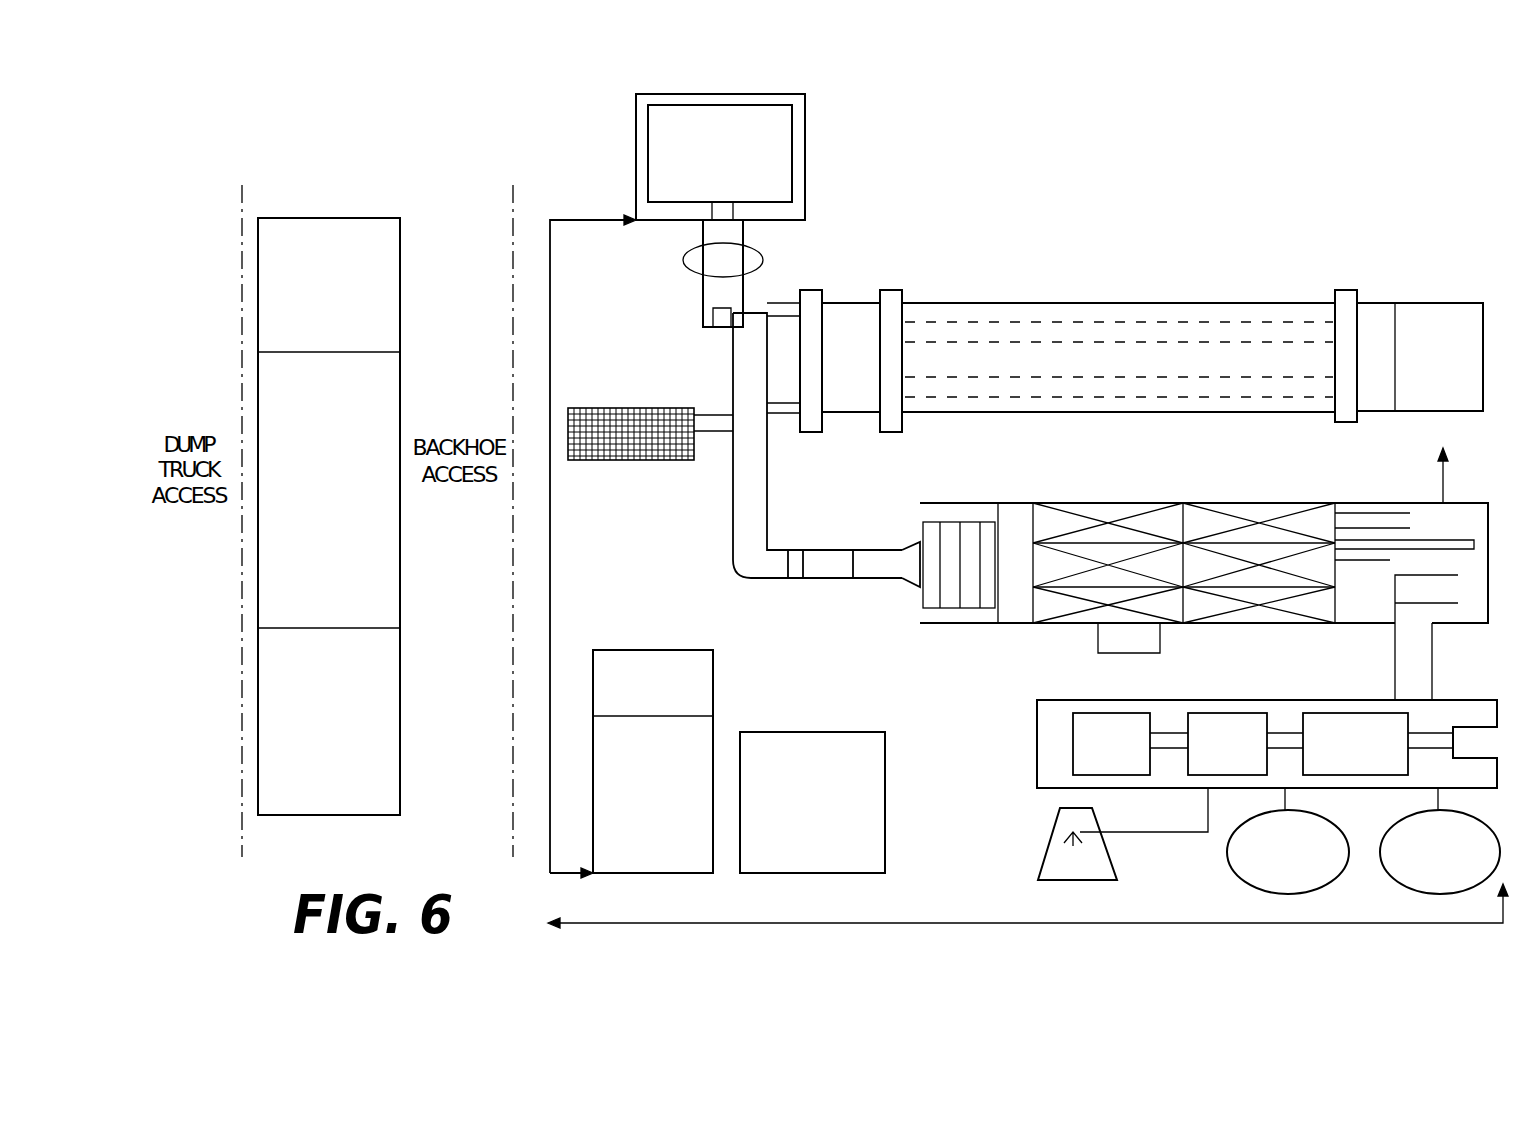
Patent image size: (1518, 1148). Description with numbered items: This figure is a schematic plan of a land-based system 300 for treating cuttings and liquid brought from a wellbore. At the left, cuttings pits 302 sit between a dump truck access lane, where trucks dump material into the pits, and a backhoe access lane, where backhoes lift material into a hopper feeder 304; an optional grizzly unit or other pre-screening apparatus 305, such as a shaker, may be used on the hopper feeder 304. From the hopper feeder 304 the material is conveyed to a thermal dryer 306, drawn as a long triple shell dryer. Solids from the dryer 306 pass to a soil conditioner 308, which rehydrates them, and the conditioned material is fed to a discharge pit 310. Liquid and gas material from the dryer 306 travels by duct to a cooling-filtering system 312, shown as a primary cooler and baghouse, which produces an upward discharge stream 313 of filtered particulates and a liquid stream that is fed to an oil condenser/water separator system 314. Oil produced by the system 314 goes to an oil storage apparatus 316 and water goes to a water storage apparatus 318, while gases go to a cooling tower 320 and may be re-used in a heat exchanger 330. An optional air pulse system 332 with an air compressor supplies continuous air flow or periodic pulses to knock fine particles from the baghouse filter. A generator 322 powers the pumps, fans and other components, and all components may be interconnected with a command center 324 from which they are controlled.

The land-based system 300 is at (553, 190).
The cuttings pits 302 is at (352, 218).
The hopper feeder 304 is at (595, 461).
The grizzly unit 305 is at (640, 462).
The thermal dryer 306 is at (1260, 303).
The soil conditioner 308 is at (712, 291).
The discharge pit 310 is at (805, 151).
The cooling-filtering system 312 is at (980, 503).
The discharge stream 313 is at (1440, 478).
The oil condenser/water separator system 314 is at (1058, 700).
The oil storage apparatus 316 is at (1240, 880).
The water storage apparatus 318 is at (1405, 887).
The cooling tower 320 is at (1045, 843).
The generator 322 is at (826, 732).
The command center 324 is at (645, 650).
The heat exchanger 330 is at (1010, 613).
The air pulse system 332 is at (1160, 638).